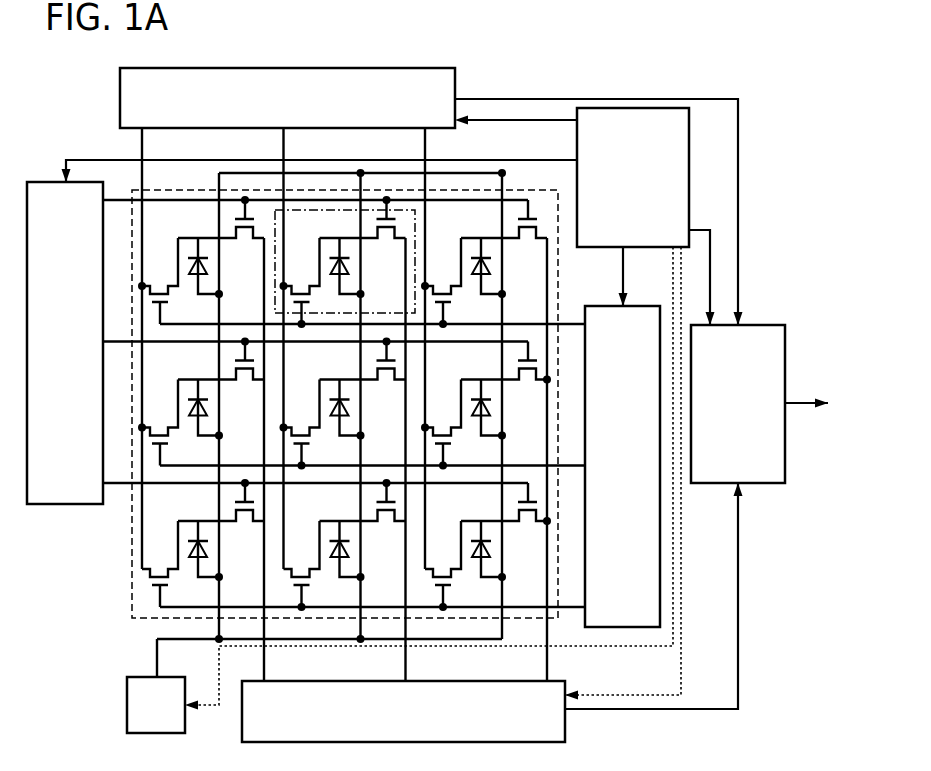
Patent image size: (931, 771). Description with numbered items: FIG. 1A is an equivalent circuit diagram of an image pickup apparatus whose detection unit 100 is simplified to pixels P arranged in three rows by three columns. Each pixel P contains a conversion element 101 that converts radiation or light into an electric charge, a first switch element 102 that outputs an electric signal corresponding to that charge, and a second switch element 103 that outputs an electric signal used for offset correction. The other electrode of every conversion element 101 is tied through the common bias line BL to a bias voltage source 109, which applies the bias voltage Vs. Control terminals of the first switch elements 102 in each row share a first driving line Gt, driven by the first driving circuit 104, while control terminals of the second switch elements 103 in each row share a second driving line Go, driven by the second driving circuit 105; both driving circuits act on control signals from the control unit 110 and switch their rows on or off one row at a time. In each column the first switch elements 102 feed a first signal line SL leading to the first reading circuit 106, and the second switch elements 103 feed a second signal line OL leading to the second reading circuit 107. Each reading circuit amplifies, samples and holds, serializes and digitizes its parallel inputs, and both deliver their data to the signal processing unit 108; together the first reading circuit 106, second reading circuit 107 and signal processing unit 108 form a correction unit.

The detection unit 100 is at (130, 555).
The conversion element 101 is at (187, 262).
The first switch element 102 is at (537, 225).
The second switch element 103 is at (150, 583).
The first driving circuit 104 is at (58, 502).
The second driving circuit 105 is at (603, 310).
The first reading circuit 106 is at (560, 733).
The second reading circuit 107 is at (448, 83).
The signal processing unit 108 is at (760, 478).
The bias voltage source 109 is at (133, 707).
The control unit 110 is at (685, 158).
The pixel P is at (417, 225).